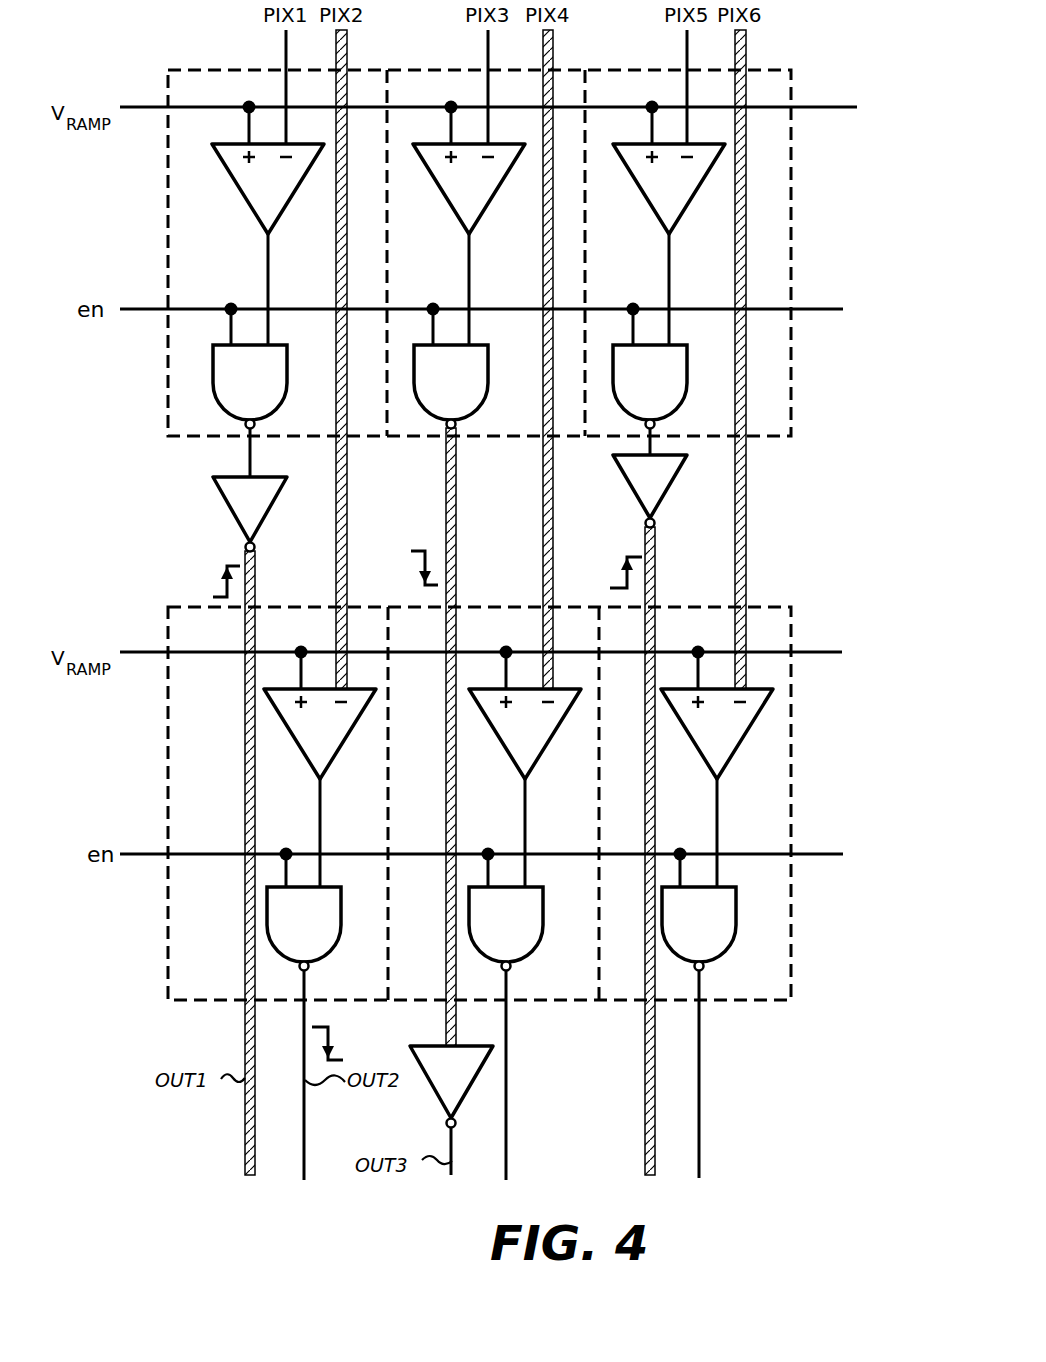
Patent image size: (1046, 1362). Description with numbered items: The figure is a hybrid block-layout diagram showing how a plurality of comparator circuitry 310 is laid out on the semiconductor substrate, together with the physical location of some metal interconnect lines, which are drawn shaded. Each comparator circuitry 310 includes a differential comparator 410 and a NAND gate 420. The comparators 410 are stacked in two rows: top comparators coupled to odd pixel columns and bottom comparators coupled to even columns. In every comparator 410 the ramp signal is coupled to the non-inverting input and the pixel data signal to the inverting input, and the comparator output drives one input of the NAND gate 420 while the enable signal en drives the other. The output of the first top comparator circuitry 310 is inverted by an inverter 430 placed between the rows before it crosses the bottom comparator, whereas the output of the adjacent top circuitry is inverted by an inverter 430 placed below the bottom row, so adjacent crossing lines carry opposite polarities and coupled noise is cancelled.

The comparator circuitry 310 is at (233, 286).
The comparator 410 is at (248, 198).
The NAND gate 420 is at (230, 389).
The inverter 430 is at (417, 797).